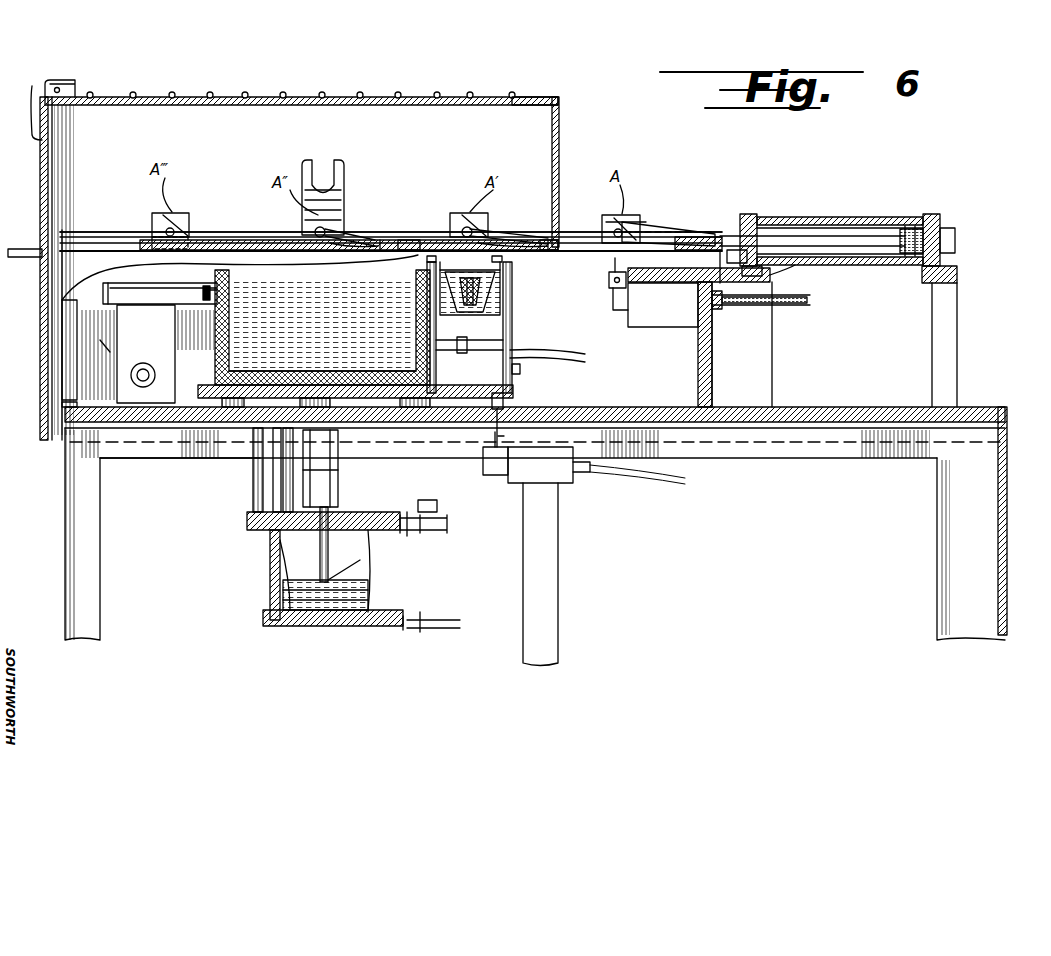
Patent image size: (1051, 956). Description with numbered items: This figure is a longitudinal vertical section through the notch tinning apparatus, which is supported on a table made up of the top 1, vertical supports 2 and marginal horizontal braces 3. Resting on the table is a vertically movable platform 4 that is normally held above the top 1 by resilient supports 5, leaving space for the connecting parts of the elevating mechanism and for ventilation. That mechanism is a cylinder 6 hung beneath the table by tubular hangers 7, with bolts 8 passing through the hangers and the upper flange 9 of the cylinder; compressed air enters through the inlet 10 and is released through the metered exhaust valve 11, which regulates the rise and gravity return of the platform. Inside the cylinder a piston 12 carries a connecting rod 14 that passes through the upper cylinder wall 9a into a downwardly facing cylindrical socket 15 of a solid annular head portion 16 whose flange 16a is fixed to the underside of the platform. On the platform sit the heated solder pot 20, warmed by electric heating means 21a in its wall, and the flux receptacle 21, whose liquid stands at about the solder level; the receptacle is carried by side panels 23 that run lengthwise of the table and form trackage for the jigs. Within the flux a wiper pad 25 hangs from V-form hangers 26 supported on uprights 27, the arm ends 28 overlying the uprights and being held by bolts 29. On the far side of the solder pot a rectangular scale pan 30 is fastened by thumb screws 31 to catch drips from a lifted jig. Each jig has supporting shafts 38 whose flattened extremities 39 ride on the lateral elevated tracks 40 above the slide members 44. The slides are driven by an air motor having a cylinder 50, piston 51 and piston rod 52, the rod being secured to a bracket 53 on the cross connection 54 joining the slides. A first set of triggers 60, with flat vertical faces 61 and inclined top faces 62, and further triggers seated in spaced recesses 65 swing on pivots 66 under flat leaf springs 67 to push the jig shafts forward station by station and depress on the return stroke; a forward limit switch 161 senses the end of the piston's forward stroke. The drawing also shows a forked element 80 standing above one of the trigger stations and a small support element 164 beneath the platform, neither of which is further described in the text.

The table top 1 is at (890, 407).
The vertical supports 2 is at (96, 580).
The marginal horizontal braces 3 is at (140, 458).
The vertically movable platform 4 is at (515, 375).
The resilient supports 5 is at (222, 408).
The cylinder 6 is at (372, 572).
The tubular hangers 7 is at (270, 499).
The bolts 8 is at (248, 537).
The upper flange 9 is at (275, 540).
The upper cylinder wall 9a is at (330, 520).
The compressed air inlet 10 is at (425, 618).
The metered exhaust valve 11 is at (447, 520).
The piston 12 is at (325, 612).
The connecting rod 14 is at (360, 554).
The cylindrical socket 15 is at (312, 484).
The solid annular head portion 16 is at (245, 445).
The flange 16a is at (378, 430).
The heated solder pot 20 is at (307, 296).
The flux receptacle 21 is at (500, 306).
The electric heating means 21a is at (236, 372).
The side panels 23 is at (762, 367).
The wiper pad 25 is at (480, 286).
The hangers 26 is at (495, 266).
The uprights 27 is at (430, 327).
The laterally extending arm ends 28 is at (441, 262).
The bolts 29 is at (430, 254).
The rectangular scale pan 30 is at (120, 291).
The thumb screws 31 is at (202, 291).
The supporting shafts 38 is at (165, 228).
The reduced flattened extremities 39 is at (165, 232).
The lateral elevated tracks 40 is at (82, 240).
The slide members 44 is at (420, 255).
The cylinder 50 is at (838, 227).
The piston 51 is at (930, 228).
The piston rod 52 is at (815, 240).
The bracket 53 is at (785, 262).
The cross connection 54 is at (705, 238).
The first set of triggers 60 is at (660, 208).
The flat vertical faces 61 is at (632, 222).
The top outwardly inclined faces 62 is at (668, 226).
The spaced recesses 65 is at (403, 240).
The pivots 66 is at (384, 242).
The flat leaf springs 67 is at (348, 236).
The fork 80 is at (326, 165).
The forward limit switch 161 is at (622, 268).
The support 164 is at (505, 400).